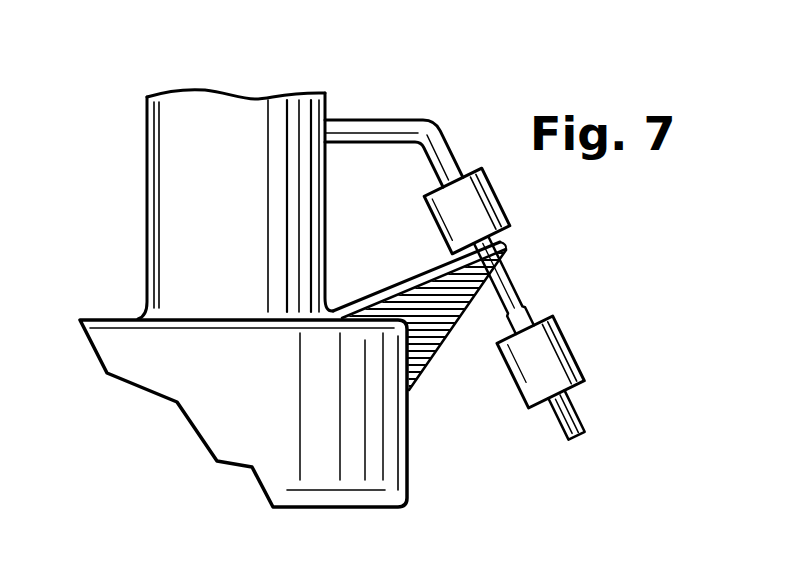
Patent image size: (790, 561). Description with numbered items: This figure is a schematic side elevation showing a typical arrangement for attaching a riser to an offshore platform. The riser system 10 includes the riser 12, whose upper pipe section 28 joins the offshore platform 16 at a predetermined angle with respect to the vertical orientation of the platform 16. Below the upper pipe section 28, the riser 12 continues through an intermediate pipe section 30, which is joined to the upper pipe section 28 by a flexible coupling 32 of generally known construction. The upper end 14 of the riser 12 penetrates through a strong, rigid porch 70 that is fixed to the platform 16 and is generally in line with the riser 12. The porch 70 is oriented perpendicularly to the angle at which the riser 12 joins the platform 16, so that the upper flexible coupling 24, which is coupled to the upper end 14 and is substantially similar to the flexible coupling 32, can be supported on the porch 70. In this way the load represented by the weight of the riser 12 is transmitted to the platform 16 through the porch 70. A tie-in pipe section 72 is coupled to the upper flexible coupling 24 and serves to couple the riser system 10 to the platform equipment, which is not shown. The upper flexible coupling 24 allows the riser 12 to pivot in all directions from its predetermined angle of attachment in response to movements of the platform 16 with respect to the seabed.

The riser system 10 is at (572, 452).
The riser 12 is at (557, 422).
The upper end 14 is at (504, 256).
The offshore platform 16 is at (240, 261).
The upper flexible coupling 24 is at (499, 208).
The upper pipe section 28 is at (516, 292).
The intermediate pipe section 30 is at (584, 426).
The flexible coupling 32 is at (575, 349).
The porch 70 is at (395, 345).
The tie-in pipe section 72 is at (431, 124).